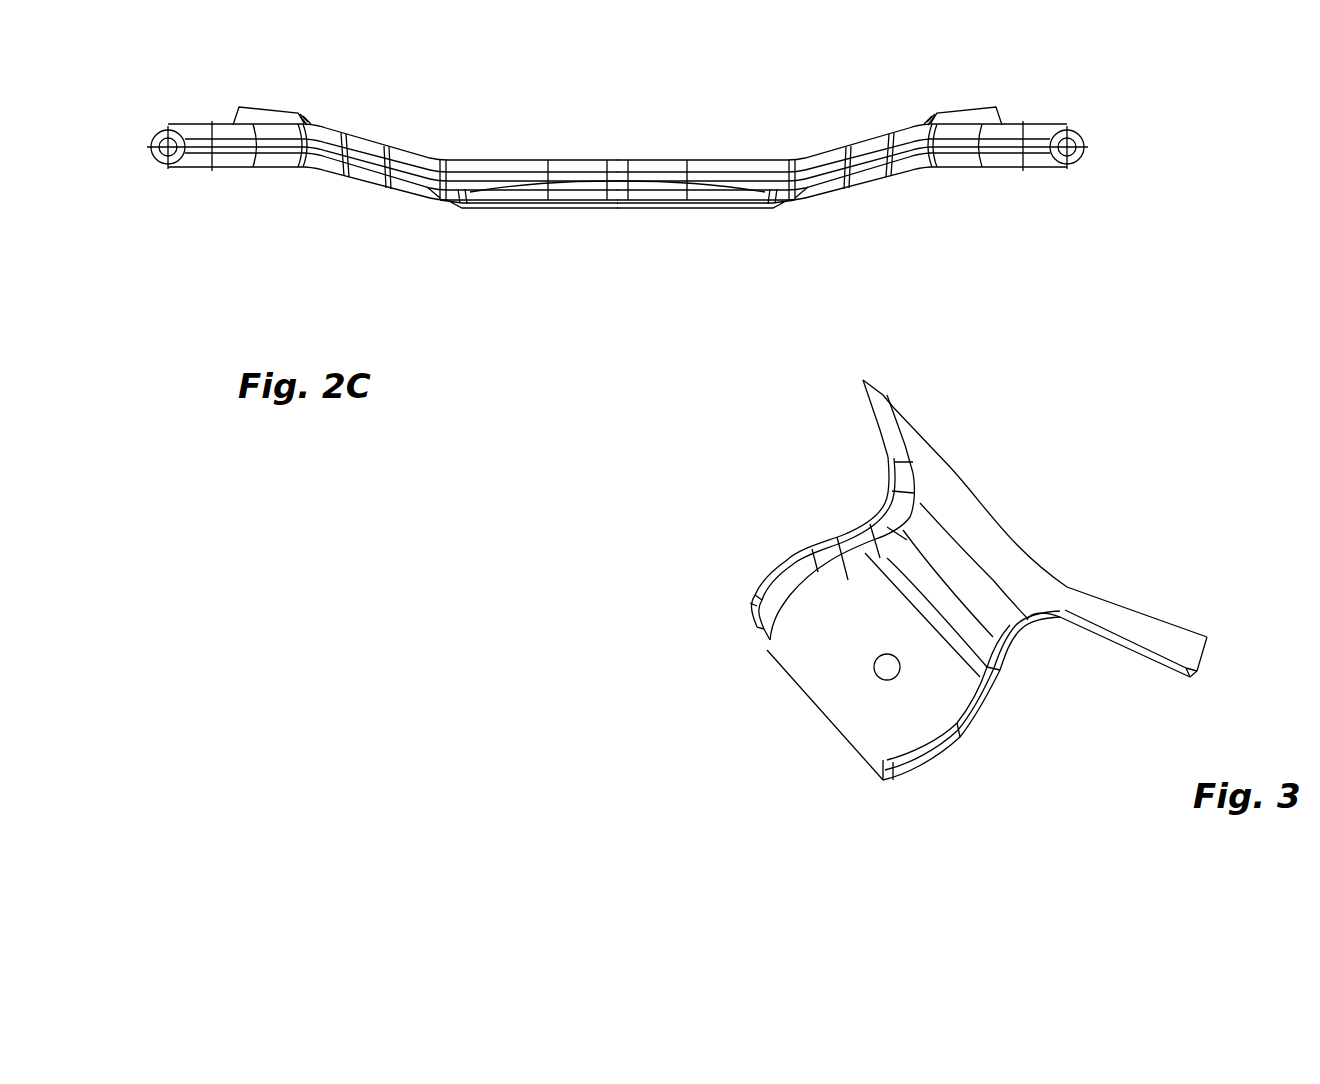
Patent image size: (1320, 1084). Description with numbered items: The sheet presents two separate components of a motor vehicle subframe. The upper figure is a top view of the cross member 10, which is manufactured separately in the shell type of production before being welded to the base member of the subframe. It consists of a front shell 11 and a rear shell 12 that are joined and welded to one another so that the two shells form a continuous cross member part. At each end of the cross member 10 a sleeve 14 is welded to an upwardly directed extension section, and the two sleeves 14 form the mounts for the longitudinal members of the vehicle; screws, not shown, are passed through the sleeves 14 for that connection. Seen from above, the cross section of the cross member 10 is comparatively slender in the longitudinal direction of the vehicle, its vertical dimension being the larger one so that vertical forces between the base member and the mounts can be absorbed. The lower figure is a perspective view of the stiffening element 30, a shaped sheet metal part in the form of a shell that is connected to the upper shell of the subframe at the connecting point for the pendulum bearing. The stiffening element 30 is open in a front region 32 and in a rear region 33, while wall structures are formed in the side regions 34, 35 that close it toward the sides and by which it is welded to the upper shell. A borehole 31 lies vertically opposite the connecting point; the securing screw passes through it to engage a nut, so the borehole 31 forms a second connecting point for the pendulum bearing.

In FIG. 2C, the cross member 10 is at (636, 191).
In FIG. 2C, the front shell 11 is at (636, 152).
In FIG. 2C, the rear shell 12 is at (791, 203).
In FIG. 2C, the sleeve 14 is at (158, 168).
In FIG. 3, the stiffening element 30 is at (907, 598).
In FIG. 3, the borehole 31 is at (886, 655).
In FIG. 3, the front region 32 is at (797, 666).
In FIG. 3, the rear region 33 is at (1083, 582).
In FIG. 3, the side region 34 is at (969, 728).
In FIG. 3, the side region 35 is at (790, 552).